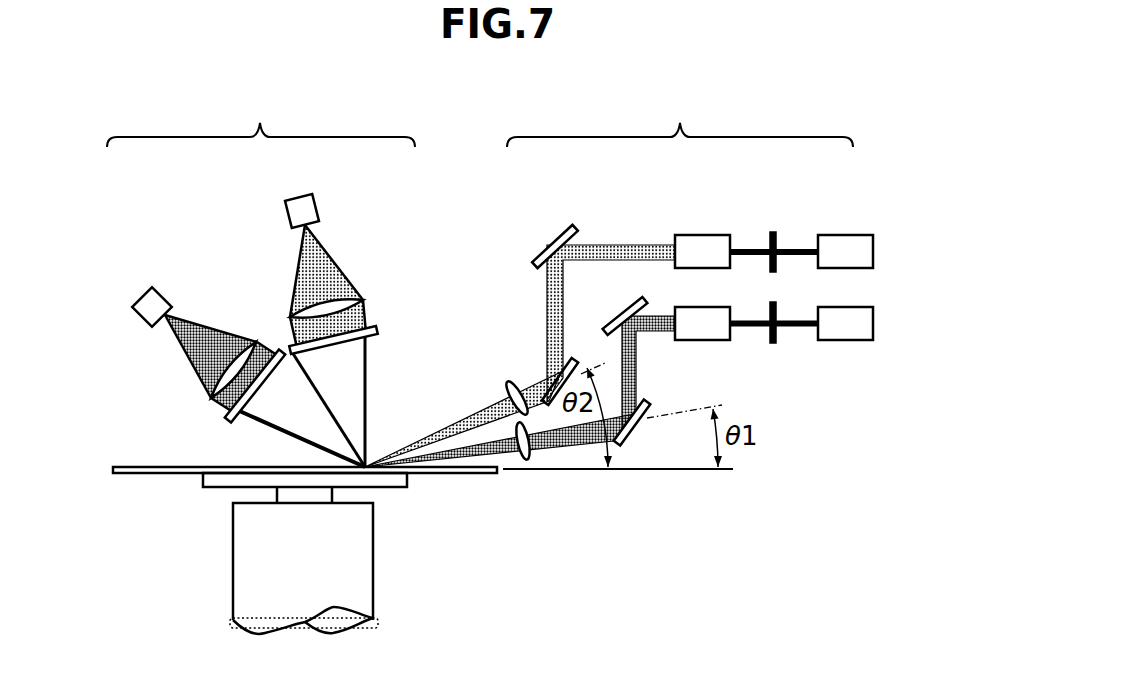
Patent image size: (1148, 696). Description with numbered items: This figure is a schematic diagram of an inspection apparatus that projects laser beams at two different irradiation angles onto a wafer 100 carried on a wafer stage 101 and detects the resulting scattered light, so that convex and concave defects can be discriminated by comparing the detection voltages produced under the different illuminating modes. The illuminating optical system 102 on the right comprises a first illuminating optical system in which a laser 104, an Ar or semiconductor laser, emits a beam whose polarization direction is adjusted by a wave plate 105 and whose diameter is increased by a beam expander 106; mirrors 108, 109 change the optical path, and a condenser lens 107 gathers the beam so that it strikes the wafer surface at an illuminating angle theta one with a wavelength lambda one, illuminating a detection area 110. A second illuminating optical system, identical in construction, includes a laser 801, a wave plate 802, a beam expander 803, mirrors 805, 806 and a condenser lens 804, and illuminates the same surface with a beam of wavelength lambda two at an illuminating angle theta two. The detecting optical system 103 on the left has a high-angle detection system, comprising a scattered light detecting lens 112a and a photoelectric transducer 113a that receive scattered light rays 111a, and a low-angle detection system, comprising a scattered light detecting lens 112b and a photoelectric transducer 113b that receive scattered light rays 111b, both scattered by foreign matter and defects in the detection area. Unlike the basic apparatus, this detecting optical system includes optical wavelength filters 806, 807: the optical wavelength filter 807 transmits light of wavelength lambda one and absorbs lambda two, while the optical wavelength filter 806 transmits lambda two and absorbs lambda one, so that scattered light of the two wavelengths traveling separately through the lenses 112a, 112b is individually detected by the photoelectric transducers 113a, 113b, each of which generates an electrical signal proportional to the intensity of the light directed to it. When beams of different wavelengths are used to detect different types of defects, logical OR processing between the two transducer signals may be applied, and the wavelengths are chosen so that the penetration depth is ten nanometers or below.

The wafer 100 is at (491, 473).
The wafer stage 101 is at (402, 487).
The illuminating optical system 102 is at (632, 312).
The detecting optical system 103 is at (270, 280).
The laser 104 is at (862, 341).
The wave plate 105 is at (776, 344).
The beam expander 106 is at (723, 341).
The condenser lens 107 is at (528, 458).
The mirror 108 is at (606, 326).
The mirror 109 is at (648, 404).
The detection area 110 is at (368, 476).
The scattered light rays 111a is at (367, 372).
The scattered light rays 111b is at (296, 440).
The scattered light detecting lens 112a is at (366, 298).
The scattered light detecting lens 112b is at (209, 396).
The photoelectric transducer 113a is at (305, 212).
The photoelectric transducer 113b is at (154, 292).
The laser 801 is at (848, 235).
The wave plate 802 is at (773, 232).
The beam expander 803 is at (708, 235).
The condenser lens 804 is at (514, 378).
The mirror 805 is at (543, 243).
The mirror / optical wavelength filter 806 is at (380, 330).
The optical wavelength filter 807 is at (229, 422).